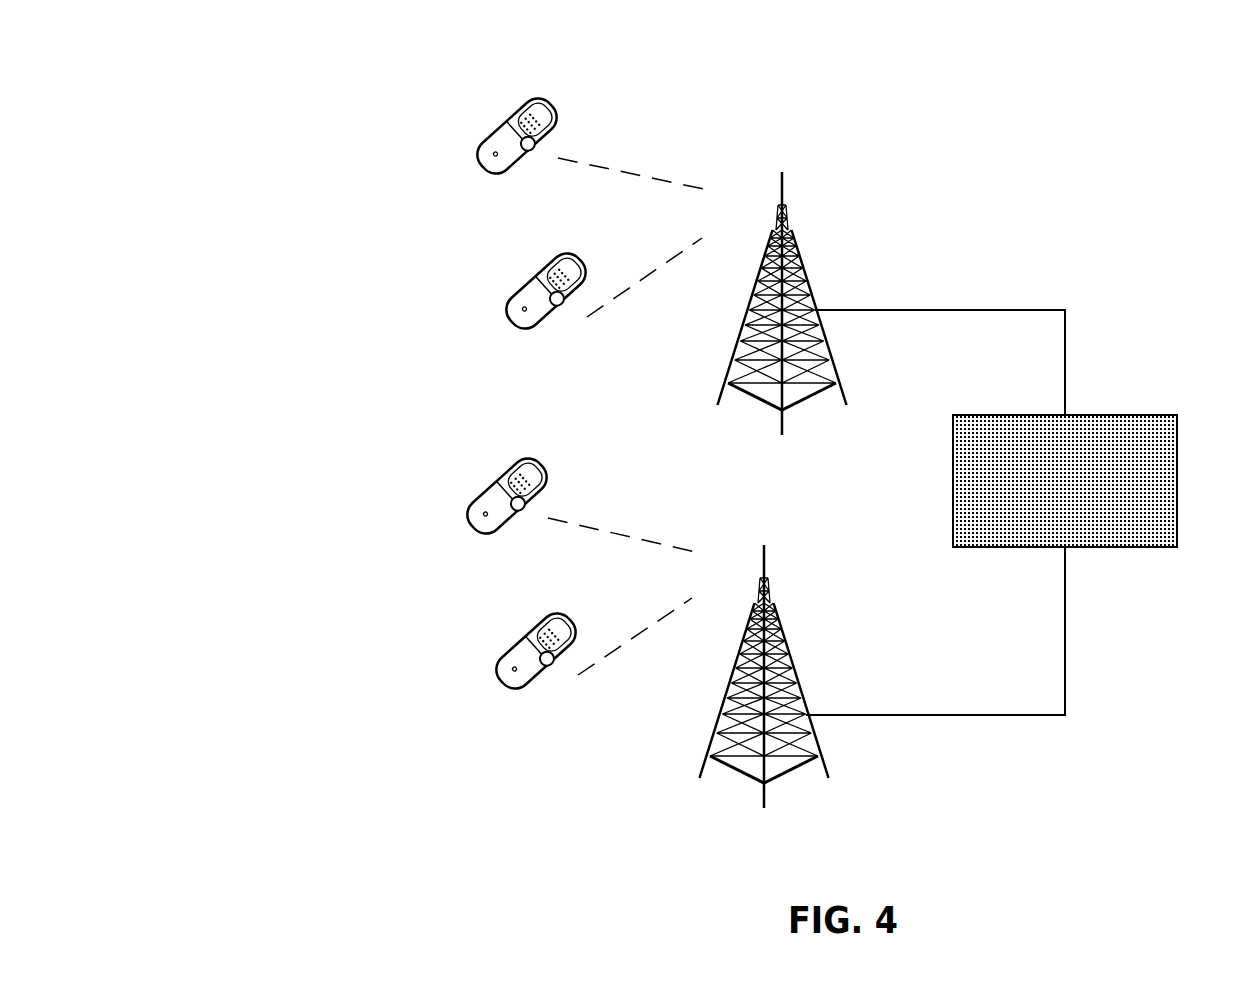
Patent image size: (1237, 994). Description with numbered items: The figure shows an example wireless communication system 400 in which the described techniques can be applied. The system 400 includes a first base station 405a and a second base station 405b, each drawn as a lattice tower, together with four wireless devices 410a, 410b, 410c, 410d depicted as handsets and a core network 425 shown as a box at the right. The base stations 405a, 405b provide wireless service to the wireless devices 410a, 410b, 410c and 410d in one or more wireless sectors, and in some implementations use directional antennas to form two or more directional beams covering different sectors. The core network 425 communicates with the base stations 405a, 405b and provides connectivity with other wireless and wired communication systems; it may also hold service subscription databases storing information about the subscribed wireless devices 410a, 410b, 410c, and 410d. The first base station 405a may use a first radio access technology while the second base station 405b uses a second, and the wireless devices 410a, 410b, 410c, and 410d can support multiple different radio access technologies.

The wireless communication system 400 is at (384, 146).
The base station 405a is at (892, 310).
The base station 405b is at (883, 689).
The wireless device 410a is at (592, 131).
The wireless device 410b is at (601, 273).
The wireless device 410c is at (580, 488).
The wireless device 410d is at (591, 638).
The core network 425 is at (1065, 460).